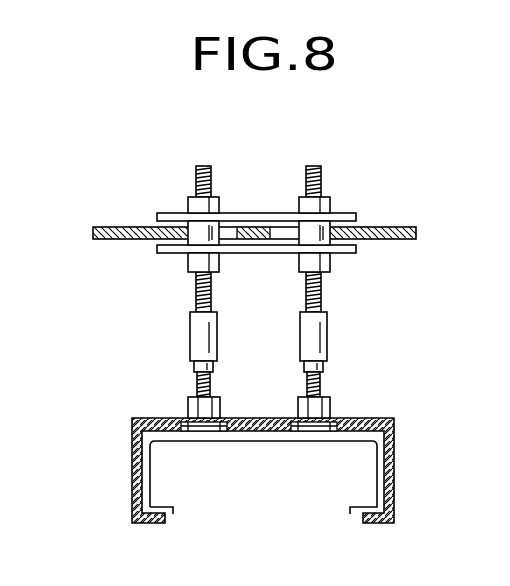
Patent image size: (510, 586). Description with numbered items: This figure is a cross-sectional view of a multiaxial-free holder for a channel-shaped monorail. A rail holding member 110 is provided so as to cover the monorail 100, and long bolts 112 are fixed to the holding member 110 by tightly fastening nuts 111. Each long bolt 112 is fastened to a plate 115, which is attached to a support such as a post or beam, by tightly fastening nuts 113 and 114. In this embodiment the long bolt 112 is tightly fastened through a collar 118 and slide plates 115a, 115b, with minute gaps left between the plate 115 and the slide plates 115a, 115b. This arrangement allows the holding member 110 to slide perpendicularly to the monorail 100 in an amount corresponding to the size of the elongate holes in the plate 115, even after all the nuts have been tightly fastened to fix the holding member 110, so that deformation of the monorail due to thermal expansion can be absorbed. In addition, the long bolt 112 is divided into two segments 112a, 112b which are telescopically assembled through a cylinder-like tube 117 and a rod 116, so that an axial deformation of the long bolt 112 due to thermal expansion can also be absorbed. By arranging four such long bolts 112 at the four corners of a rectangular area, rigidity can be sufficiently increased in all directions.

The monorail 100 is at (150, 470).
The rail holding member 110 is at (132, 470).
The nuts 111 is at (190, 411).
The long bolt 112 is at (197, 297).
The bolt segment 112a is at (322, 386).
The bolt segment 112b is at (306, 296).
The nut 113 is at (326, 265).
The nut 114 is at (323, 198).
The plate 115 is at (112, 227).
The slide plate 115a is at (172, 213).
The slide plate 115b is at (170, 253).
The rod 116 is at (196, 367).
The cylinder-like tube 117 is at (196, 329).
The collar 118 is at (311, 237).